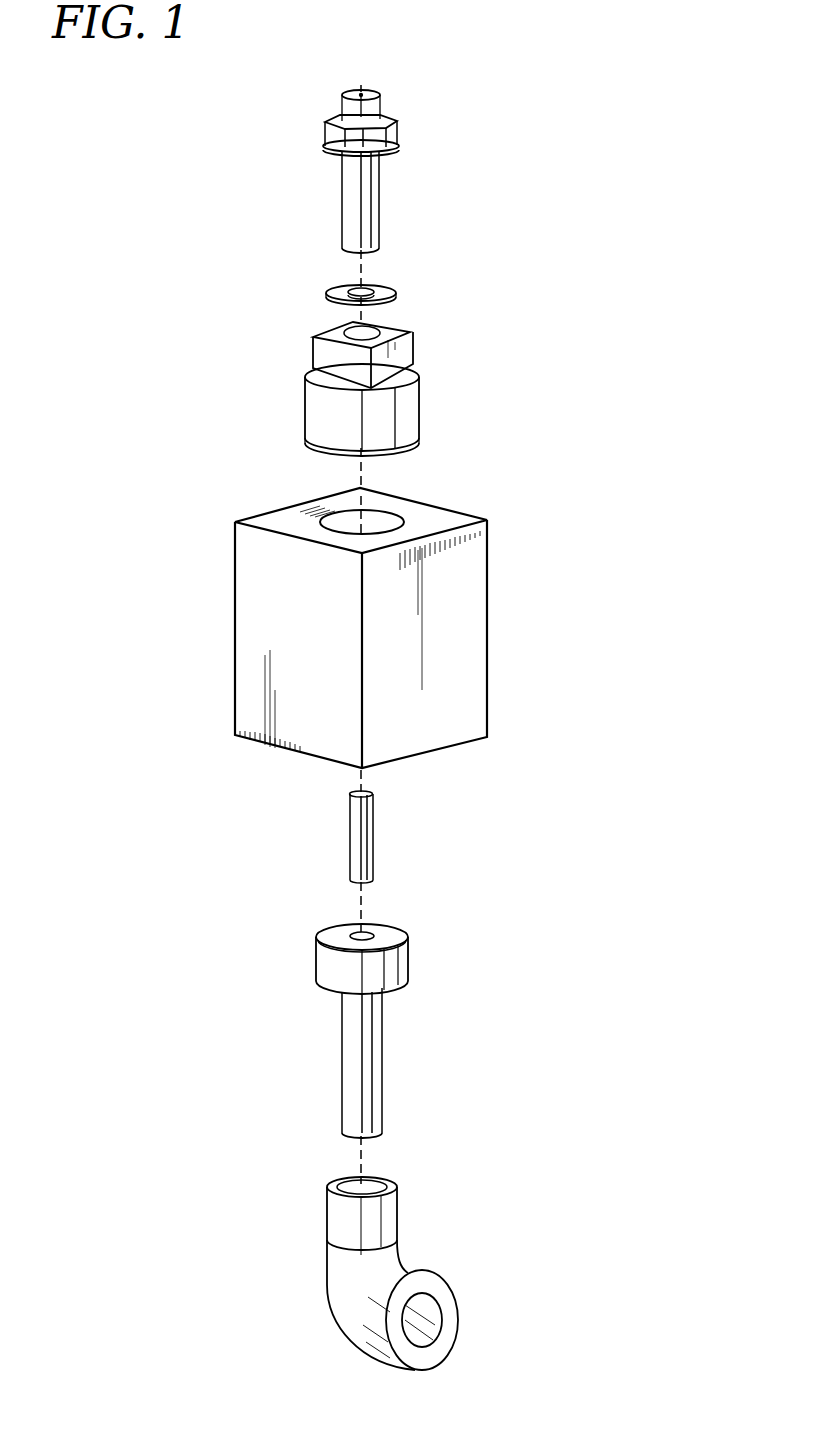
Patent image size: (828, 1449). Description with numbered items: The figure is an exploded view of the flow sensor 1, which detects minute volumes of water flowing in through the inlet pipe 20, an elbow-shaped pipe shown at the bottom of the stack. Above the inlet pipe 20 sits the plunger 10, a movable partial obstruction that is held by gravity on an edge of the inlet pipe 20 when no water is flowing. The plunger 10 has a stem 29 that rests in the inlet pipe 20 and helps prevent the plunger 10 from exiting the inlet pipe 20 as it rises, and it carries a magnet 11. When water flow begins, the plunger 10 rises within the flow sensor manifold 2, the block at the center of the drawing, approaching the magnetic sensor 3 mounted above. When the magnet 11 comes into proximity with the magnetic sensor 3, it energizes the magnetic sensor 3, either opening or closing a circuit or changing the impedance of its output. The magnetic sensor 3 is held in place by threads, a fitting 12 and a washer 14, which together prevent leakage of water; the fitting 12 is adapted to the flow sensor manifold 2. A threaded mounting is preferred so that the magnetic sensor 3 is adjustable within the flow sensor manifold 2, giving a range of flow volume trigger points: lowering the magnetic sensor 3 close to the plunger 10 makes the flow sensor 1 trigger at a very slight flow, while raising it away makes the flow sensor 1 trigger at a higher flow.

The flow sensor 1 is at (580, 131).
The flow sensor manifold 2 is at (488, 572).
The magnetic sensor 3 is at (396, 123).
The plunger 10 is at (409, 963).
The magnet 11 is at (374, 825).
The fitting 12 is at (419, 387).
The washer 14 is at (386, 290).
The inlet pipe 20 is at (434, 1283).
The stem 29 is at (383, 1052).